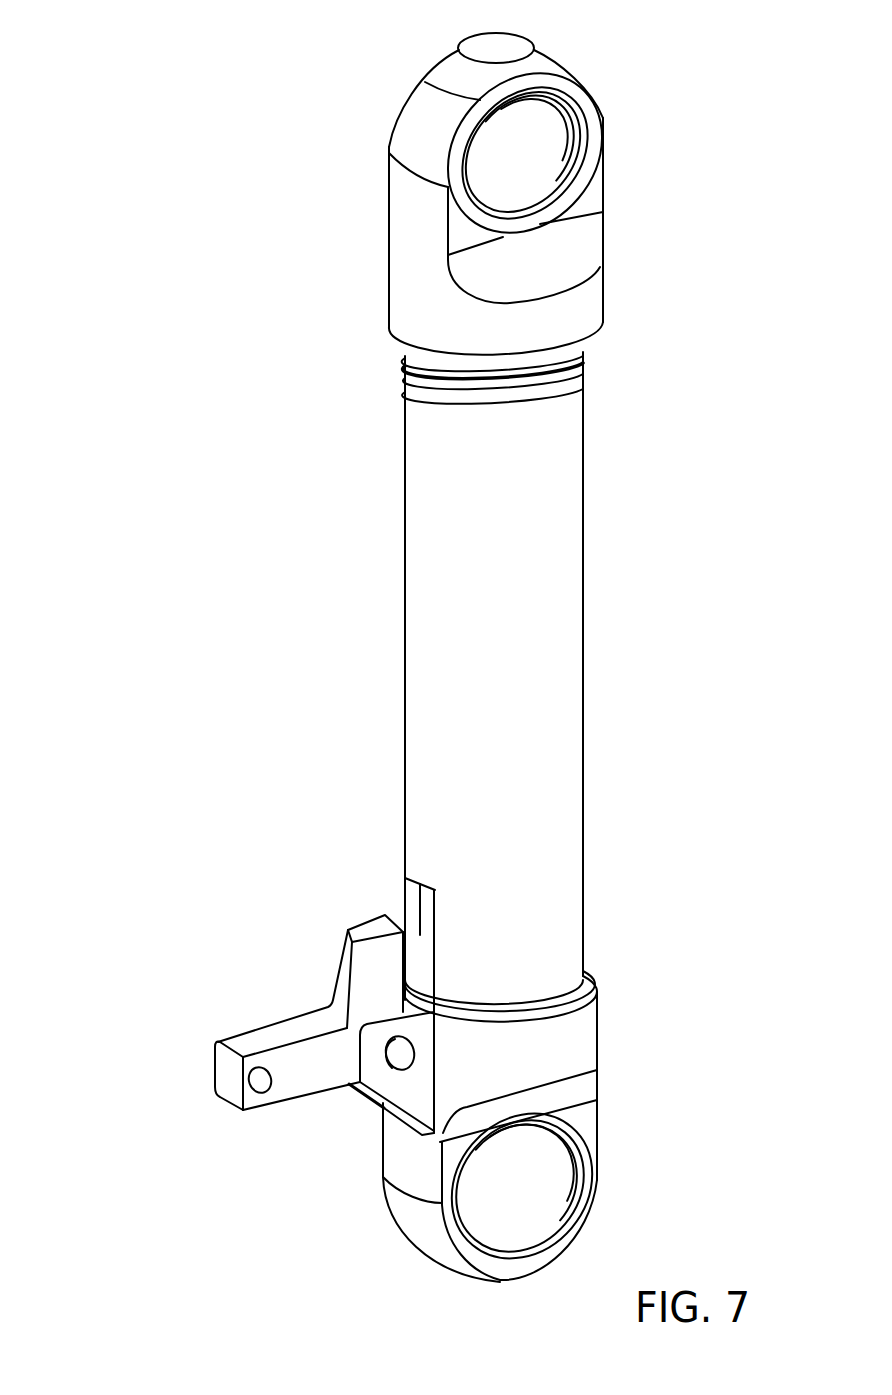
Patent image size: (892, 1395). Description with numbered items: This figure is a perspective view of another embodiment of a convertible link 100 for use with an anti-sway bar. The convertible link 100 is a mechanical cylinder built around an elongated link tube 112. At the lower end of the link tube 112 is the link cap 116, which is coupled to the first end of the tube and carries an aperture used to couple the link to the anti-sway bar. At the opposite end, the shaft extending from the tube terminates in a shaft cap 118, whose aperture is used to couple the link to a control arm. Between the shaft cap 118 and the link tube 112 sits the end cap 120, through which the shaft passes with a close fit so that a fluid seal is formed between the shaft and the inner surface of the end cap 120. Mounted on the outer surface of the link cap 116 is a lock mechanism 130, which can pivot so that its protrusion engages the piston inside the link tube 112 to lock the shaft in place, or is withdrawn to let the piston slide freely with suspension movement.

The convertible link 100 is at (222, 130).
The link tube 112 is at (530, 613).
The link cap 116 is at (573, 1045).
The shaft cap 118 is at (577, 318).
The end cap 120 is at (435, 387).
The lock mechanism 130 is at (320, 1062).